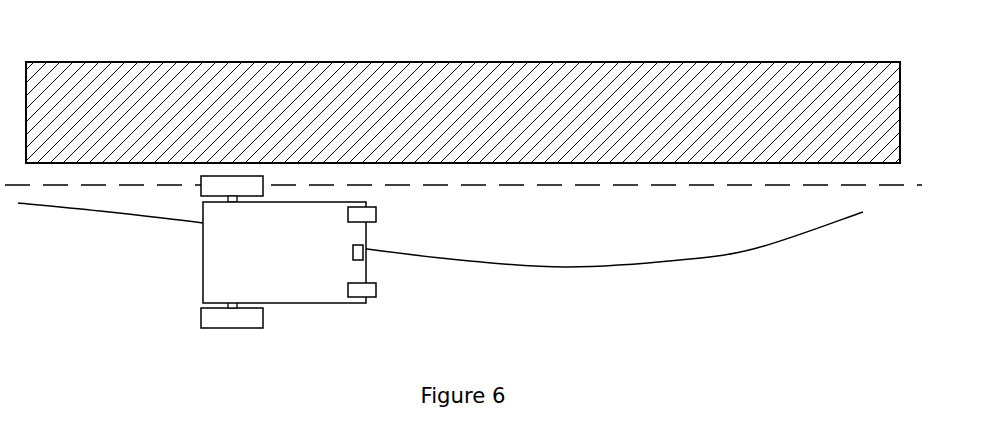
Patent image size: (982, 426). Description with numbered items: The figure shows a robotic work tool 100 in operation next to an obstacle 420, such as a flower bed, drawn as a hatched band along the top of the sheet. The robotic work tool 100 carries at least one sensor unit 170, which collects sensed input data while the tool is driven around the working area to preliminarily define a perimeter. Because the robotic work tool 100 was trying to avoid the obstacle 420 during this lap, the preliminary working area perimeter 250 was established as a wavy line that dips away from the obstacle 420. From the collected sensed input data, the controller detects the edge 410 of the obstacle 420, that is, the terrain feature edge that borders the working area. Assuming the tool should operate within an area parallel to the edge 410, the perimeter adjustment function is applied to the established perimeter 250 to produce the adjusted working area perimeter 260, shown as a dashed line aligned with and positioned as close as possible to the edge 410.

The obstacle 420 is at (215, 105).
The edge 410 is at (748, 163).
The adjusted working area perimeter 260 is at (567, 185).
The preliminary working area perimeter 250 is at (757, 248).
The robotic work tool 100 is at (268, 303).
The sensor unit 170 is at (353, 256).